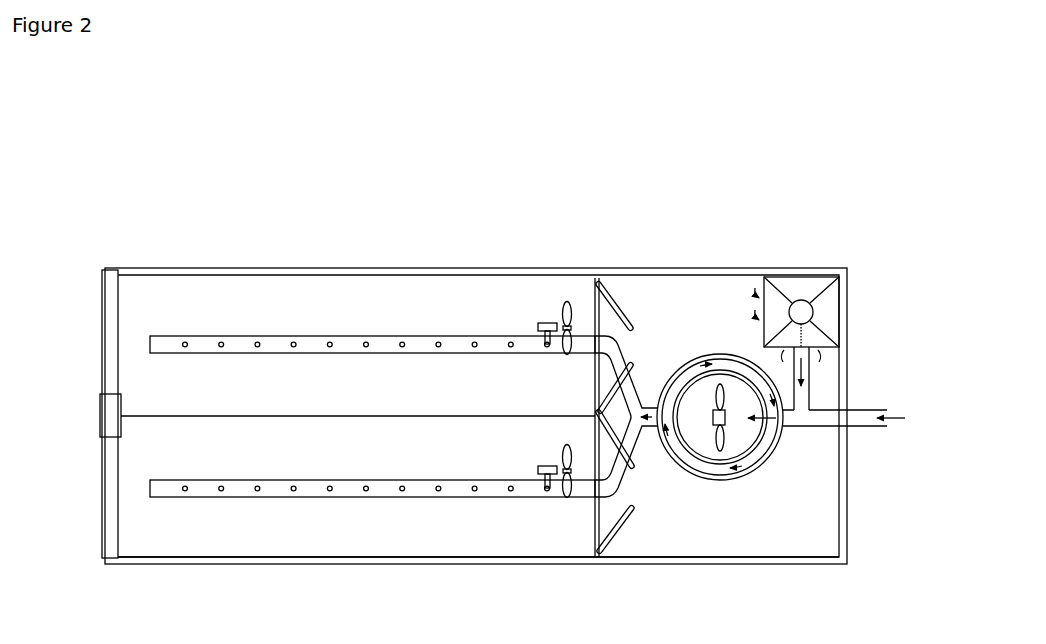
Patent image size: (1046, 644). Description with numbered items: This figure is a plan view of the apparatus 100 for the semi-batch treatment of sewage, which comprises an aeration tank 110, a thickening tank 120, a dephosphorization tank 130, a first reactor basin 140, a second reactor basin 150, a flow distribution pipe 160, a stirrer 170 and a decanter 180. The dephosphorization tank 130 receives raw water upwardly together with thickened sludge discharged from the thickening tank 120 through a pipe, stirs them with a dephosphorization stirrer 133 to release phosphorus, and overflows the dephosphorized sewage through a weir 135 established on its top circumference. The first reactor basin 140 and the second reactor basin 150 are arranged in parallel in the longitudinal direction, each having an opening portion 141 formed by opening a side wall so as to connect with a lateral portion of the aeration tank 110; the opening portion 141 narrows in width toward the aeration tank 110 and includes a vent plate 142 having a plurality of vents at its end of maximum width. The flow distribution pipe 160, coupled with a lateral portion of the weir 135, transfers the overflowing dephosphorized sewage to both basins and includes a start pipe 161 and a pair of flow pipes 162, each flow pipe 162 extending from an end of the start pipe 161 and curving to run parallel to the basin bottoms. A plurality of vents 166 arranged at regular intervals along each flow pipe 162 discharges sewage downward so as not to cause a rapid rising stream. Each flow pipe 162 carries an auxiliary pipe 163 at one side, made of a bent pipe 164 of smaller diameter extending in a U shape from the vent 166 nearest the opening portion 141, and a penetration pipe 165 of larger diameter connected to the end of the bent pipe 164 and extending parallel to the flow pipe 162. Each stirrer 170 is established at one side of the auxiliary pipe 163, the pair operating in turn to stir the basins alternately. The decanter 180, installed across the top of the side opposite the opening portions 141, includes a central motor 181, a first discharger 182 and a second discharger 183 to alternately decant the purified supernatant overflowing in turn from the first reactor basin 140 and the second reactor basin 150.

The apparatus for the semi-batch treatment of sewage 100 is at (522, 143).
The aeration tank 110 is at (821, 548).
The thickening tank 120 is at (758, 276).
The dephosphorization tank 130 is at (745, 492).
The dephosphorization stirrer 133 is at (708, 468).
The weir 135 is at (676, 478).
The first reactor basin 140 is at (238, 549).
The opening portion 141 is at (606, 295).
The vent plate 142 is at (600, 418).
The second reactor basin 150 is at (238, 285).
The flow distribution pipe 160 is at (652, 385).
The start pipe 161 is at (650, 437).
The flow pipe 162 is at (422, 343).
The auxiliary pipe 163 is at (531, 324).
The bent pipe 164 is at (547, 343).
The penetration pipe 165 is at (543, 322).
The vents 166 is at (366, 340).
The stirrer 170 is at (567, 300).
The decanter 180 is at (74, 440).
The central motor 181 is at (104, 415).
The first discharger 182 is at (104, 507).
The second discharger 183 is at (104, 329).